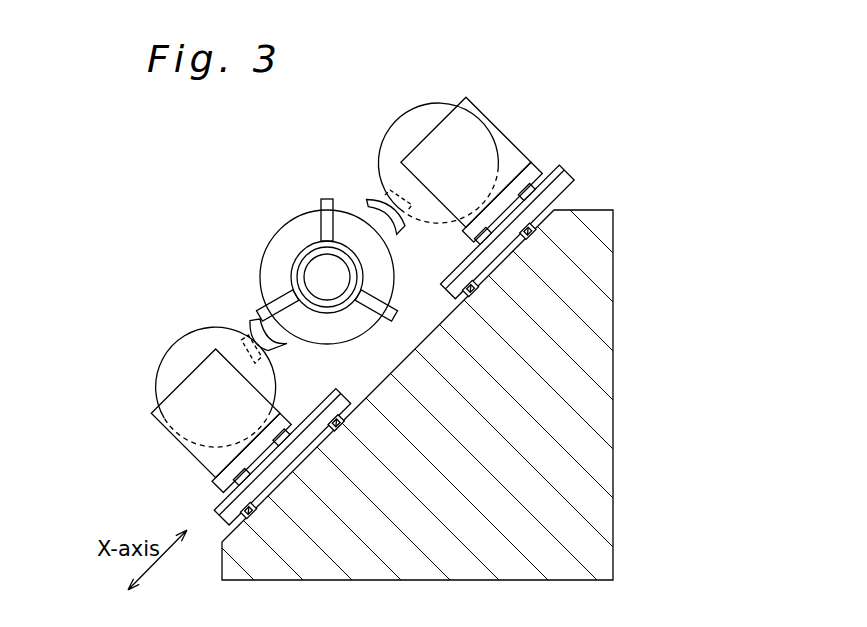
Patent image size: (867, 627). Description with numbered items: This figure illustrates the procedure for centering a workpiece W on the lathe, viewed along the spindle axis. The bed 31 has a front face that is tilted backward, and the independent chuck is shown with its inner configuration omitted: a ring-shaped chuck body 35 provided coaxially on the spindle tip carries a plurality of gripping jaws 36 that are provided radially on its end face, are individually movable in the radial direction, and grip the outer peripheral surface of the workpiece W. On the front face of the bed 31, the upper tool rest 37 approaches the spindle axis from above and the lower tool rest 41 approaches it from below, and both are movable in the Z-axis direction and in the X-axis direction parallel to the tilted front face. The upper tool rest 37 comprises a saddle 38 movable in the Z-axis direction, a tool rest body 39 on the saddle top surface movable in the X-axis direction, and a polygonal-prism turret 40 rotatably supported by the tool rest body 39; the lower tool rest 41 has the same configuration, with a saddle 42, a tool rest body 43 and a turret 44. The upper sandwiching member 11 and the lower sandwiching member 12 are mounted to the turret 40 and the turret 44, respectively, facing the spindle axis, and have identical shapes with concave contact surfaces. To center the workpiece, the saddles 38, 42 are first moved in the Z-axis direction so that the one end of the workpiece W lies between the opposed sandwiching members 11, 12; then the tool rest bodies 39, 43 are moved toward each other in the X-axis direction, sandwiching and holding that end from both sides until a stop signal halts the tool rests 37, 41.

The upper sandwiching member 11 is at (367, 197).
The lower sandwiching member 12 is at (250, 322).
The bed 31 is at (615, 230).
The chuck body 35 is at (282, 253).
The gripping jaws 36 is at (318, 213).
The upper tool rest 37 is at (505, 159).
The saddle 38 is at (567, 175).
The tool rest body 39 is at (512, 152).
The turret 40 is at (420, 101).
The lower tool rest 41 is at (194, 416).
The saddle 42 is at (222, 507).
The tool rest body 43 is at (150, 409).
The turret 44 is at (163, 368).
The workpiece W is at (288, 280).